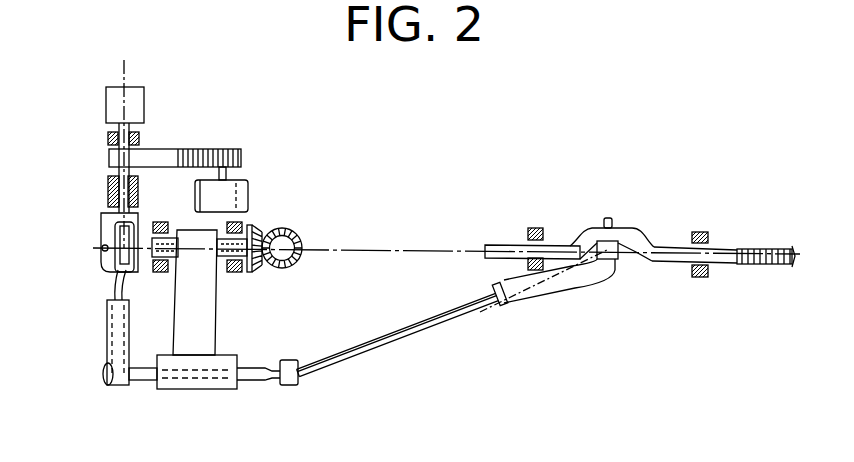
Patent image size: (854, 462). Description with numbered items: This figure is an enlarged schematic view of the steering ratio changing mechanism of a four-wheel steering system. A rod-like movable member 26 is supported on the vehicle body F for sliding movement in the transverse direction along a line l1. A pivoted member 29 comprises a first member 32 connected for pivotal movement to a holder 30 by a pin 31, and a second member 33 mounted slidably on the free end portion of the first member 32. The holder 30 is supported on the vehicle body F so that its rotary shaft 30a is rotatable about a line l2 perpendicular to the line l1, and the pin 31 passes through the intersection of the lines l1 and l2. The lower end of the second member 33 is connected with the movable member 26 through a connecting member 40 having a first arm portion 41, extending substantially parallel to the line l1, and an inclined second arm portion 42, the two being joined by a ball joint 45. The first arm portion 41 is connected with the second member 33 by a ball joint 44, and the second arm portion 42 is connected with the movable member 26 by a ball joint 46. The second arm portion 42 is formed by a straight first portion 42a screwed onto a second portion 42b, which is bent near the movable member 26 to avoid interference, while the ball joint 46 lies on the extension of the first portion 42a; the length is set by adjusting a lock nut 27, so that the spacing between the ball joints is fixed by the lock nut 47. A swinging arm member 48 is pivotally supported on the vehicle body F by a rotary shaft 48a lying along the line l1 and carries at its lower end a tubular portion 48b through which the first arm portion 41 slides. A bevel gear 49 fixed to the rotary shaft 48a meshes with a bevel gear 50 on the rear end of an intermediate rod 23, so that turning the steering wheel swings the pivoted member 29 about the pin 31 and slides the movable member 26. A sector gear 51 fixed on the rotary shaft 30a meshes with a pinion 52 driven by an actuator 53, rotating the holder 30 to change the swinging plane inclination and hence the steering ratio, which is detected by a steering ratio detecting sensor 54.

The intermediate rod 23 is at (298, 240).
The rod-like movable member 26 is at (625, 228).
The lock nut 27 is at (757, 252).
The pivoted member 29 is at (96, 280).
The holder 30 is at (102, 220).
The rotary shaft 30a is at (108, 190).
The pin 31 is at (102, 249).
The first member 32 is at (108, 302).
The second member 33 is at (103, 366).
The connecting member 40 is at (382, 361).
The first arm portion 41 is at (260, 383).
The second arm portion 42 is at (443, 327).
The first portion 42a is at (310, 383).
The second portion 42b is at (567, 287).
The ball joint 44 is at (130, 386).
The ball joint 45 is at (292, 360).
The ball joint 46 is at (618, 260).
The lock nut 47 is at (502, 303).
The swinging arm member 48 is at (209, 312).
The rotary shaft 48a is at (250, 220).
The tubular portion 48b is at (200, 389).
The bevel gear 49 is at (255, 273).
The bevel gear 50 is at (296, 232).
The sector gear 51 is at (190, 148).
The pinion 52 is at (241, 158).
The actuator 53 is at (248, 195).
The steering ratio detecting sensor 54 is at (144, 113).
The vehicle body F is at (108, 138).
The line l1 is at (420, 247).
The line l2 is at (128, 76).